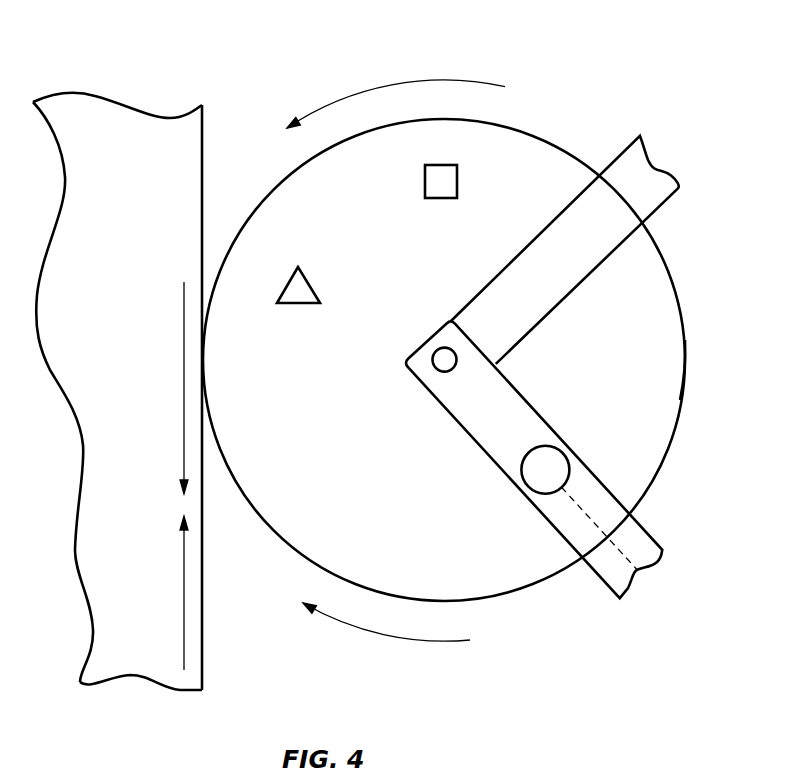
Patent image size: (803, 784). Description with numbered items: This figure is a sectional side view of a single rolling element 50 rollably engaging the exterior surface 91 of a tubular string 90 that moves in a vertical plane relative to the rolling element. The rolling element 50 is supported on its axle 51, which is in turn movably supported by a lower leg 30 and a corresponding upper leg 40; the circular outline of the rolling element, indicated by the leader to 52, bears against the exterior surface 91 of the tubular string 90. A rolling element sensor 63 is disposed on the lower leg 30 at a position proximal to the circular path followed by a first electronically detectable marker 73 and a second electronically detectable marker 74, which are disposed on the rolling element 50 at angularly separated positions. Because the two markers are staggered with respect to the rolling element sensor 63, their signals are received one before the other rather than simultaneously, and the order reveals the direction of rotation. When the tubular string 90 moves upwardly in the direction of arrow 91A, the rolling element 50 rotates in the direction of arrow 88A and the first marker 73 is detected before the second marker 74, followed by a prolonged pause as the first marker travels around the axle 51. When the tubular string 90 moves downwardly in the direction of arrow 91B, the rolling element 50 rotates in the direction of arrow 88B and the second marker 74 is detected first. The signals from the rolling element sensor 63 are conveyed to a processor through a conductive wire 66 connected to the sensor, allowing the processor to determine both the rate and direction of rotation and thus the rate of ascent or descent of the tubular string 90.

The lower leg 30 is at (549, 527).
The upper leg 40 is at (575, 287).
The rolling element 50 is at (377, 544).
The axle 51 is at (445, 348).
The disk perimeter 52 is at (686, 358).
The rolling element sensor 63 is at (565, 455).
The conductive wire 66 is at (626, 555).
The first electronically detectable marker 73 is at (457, 183).
The second electronically detectable marker 74 is at (304, 284).
The arrow 88A is at (373, 633).
The arrow 88B is at (372, 88).
The tubular string 90 is at (148, 189).
The exterior surface 91 is at (203, 132).
The arrow 91A is at (184, 553).
The arrow 91B is at (184, 382).